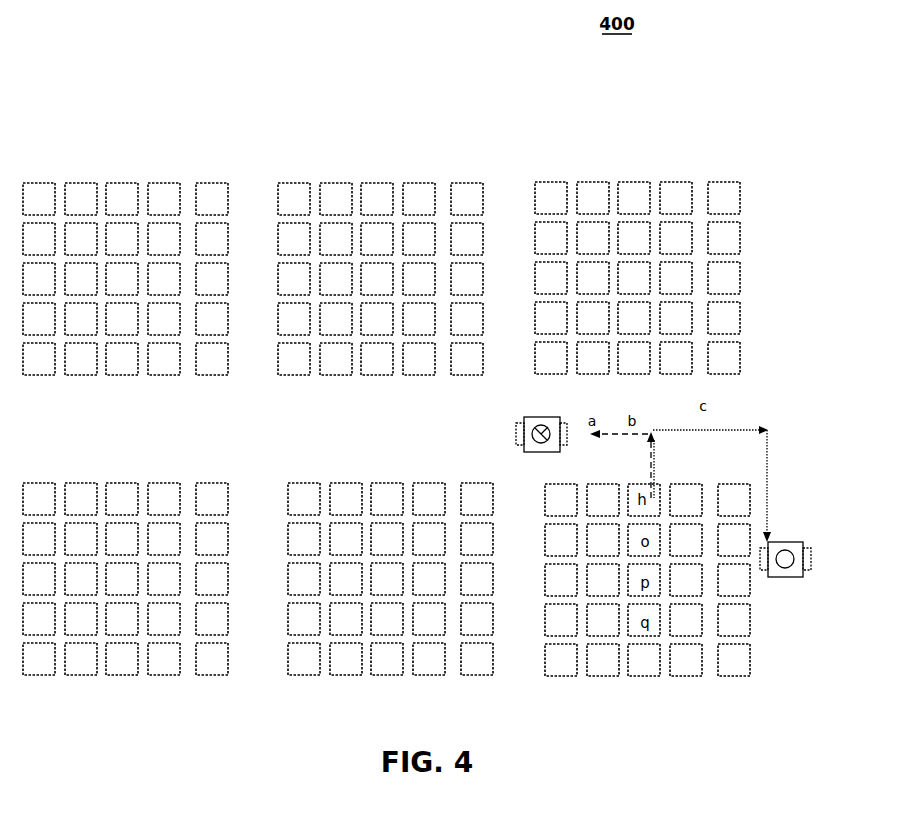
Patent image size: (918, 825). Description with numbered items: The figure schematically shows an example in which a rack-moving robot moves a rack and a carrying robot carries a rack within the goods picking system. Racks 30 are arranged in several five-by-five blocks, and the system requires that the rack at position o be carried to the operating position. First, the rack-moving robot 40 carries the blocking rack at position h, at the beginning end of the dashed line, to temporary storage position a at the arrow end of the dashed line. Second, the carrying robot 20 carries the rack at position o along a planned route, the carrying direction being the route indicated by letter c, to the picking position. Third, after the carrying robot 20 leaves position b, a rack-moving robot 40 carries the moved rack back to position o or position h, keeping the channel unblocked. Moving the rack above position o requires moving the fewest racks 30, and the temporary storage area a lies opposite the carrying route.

The rack 30 is at (550, 484).
The rack-moving robot 40 is at (545, 417).
The carrying robot 20 is at (806, 559).